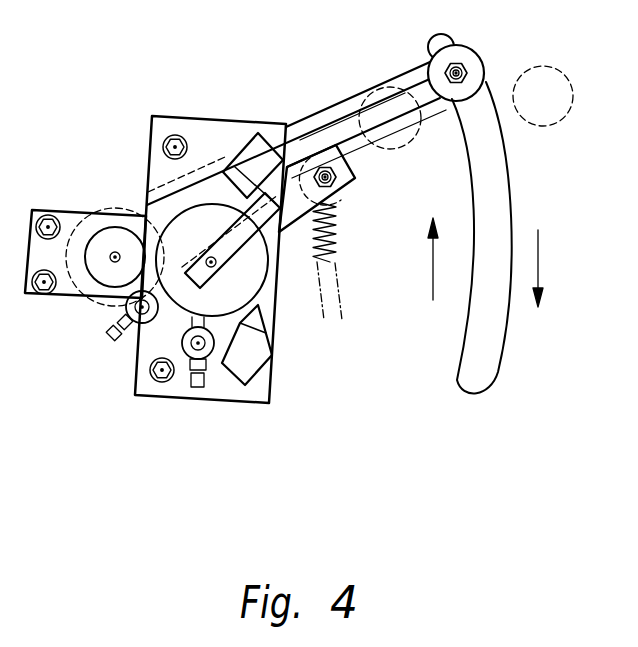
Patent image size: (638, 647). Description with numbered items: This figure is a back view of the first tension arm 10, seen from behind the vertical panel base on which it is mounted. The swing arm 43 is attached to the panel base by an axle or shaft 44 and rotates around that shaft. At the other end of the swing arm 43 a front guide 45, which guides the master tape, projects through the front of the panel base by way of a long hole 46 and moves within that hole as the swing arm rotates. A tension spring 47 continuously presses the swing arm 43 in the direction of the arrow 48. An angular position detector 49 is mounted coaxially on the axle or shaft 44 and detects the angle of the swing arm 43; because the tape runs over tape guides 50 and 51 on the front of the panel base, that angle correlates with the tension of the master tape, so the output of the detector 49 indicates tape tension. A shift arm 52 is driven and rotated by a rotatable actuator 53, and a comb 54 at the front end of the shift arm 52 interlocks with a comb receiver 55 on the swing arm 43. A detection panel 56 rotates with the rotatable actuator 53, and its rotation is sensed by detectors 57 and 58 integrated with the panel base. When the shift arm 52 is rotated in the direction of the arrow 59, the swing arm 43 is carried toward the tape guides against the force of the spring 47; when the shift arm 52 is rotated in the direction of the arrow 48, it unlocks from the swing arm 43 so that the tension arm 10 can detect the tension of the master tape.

The first tension arm 10 is at (343, 107).
The swing arm 43 is at (366, 154).
The axle or shaft 44 is at (115, 252).
The front guide 45 is at (483, 78).
The long hole 46 is at (505, 180).
The tension spring 47 is at (340, 240).
The arrow 48 is at (540, 270).
The angular position detector 49 is at (102, 282).
The tape guide 50 is at (421, 128).
The tape guide 51 is at (565, 74).
The shift arm 52 is at (281, 228).
The rotatable actuator 53 is at (262, 292).
The comb 54 is at (346, 195).
The comb receiver 55 is at (318, 112).
The detection panel 56 is at (275, 283).
The detector 57 is at (242, 170).
The detector 58 is at (213, 365).
The arrow 59 is at (433, 268).